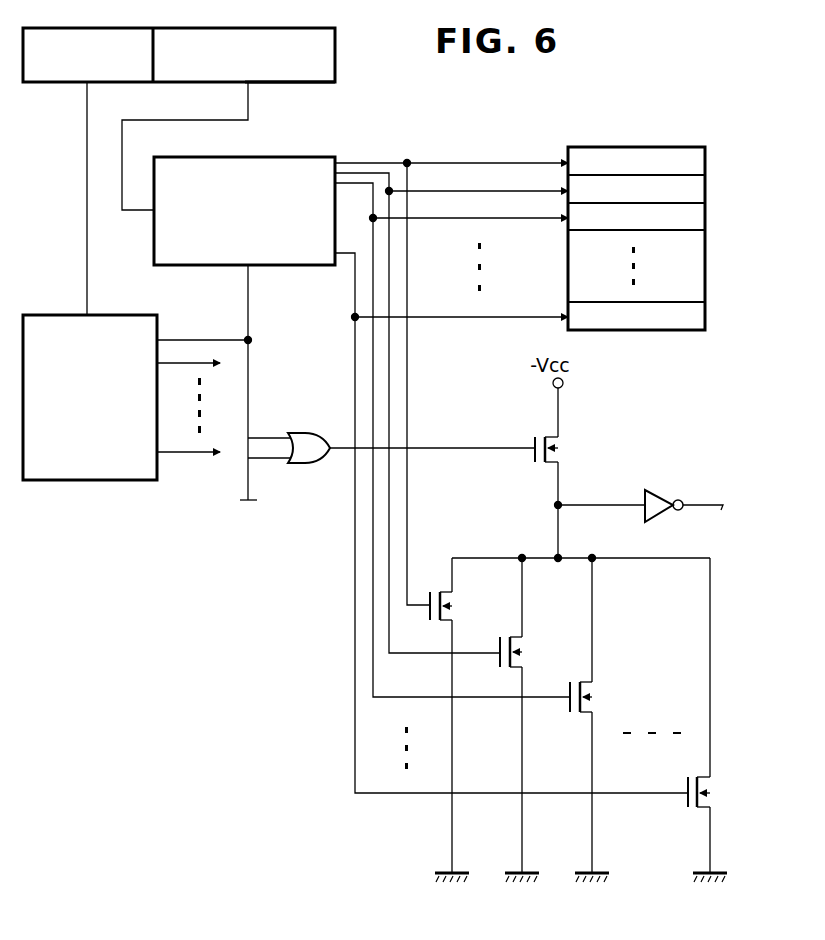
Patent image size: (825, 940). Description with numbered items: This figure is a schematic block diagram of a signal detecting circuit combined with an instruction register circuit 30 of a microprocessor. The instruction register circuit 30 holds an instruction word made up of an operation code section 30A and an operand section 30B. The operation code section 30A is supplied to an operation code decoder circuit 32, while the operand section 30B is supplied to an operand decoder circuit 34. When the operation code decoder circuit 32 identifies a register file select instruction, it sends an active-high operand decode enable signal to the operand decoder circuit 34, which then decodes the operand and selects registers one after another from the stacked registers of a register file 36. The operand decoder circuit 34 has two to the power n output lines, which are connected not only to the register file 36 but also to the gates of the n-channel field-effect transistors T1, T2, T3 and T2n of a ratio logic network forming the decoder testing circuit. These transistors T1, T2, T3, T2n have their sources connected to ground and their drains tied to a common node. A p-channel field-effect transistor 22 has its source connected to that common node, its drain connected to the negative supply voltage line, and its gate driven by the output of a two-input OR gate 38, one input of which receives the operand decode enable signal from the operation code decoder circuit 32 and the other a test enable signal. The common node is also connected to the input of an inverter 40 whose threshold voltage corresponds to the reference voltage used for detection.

The instruction register circuit 30 is at (337, 42).
The operation code section 30A is at (117, 83).
The operand section 30B is at (280, 83).
The operation code decoder circuit 32 is at (55, 315).
The operand decoder circuit 34 is at (220, 155).
The register file 36 is at (577, 147).
The two-input logic OR gate 38 is at (308, 433).
The p-channel field-effect transistor 22 is at (534, 437).
The inverter 40 is at (655, 490).
The n-channel field-effect transistor T1 is at (430, 592).
The n-channel field-effect transistor T2 is at (500, 640).
The n-channel field-effect transistor T3 is at (570, 684).
The n-channel field-effect transistor T2n is at (688, 800).